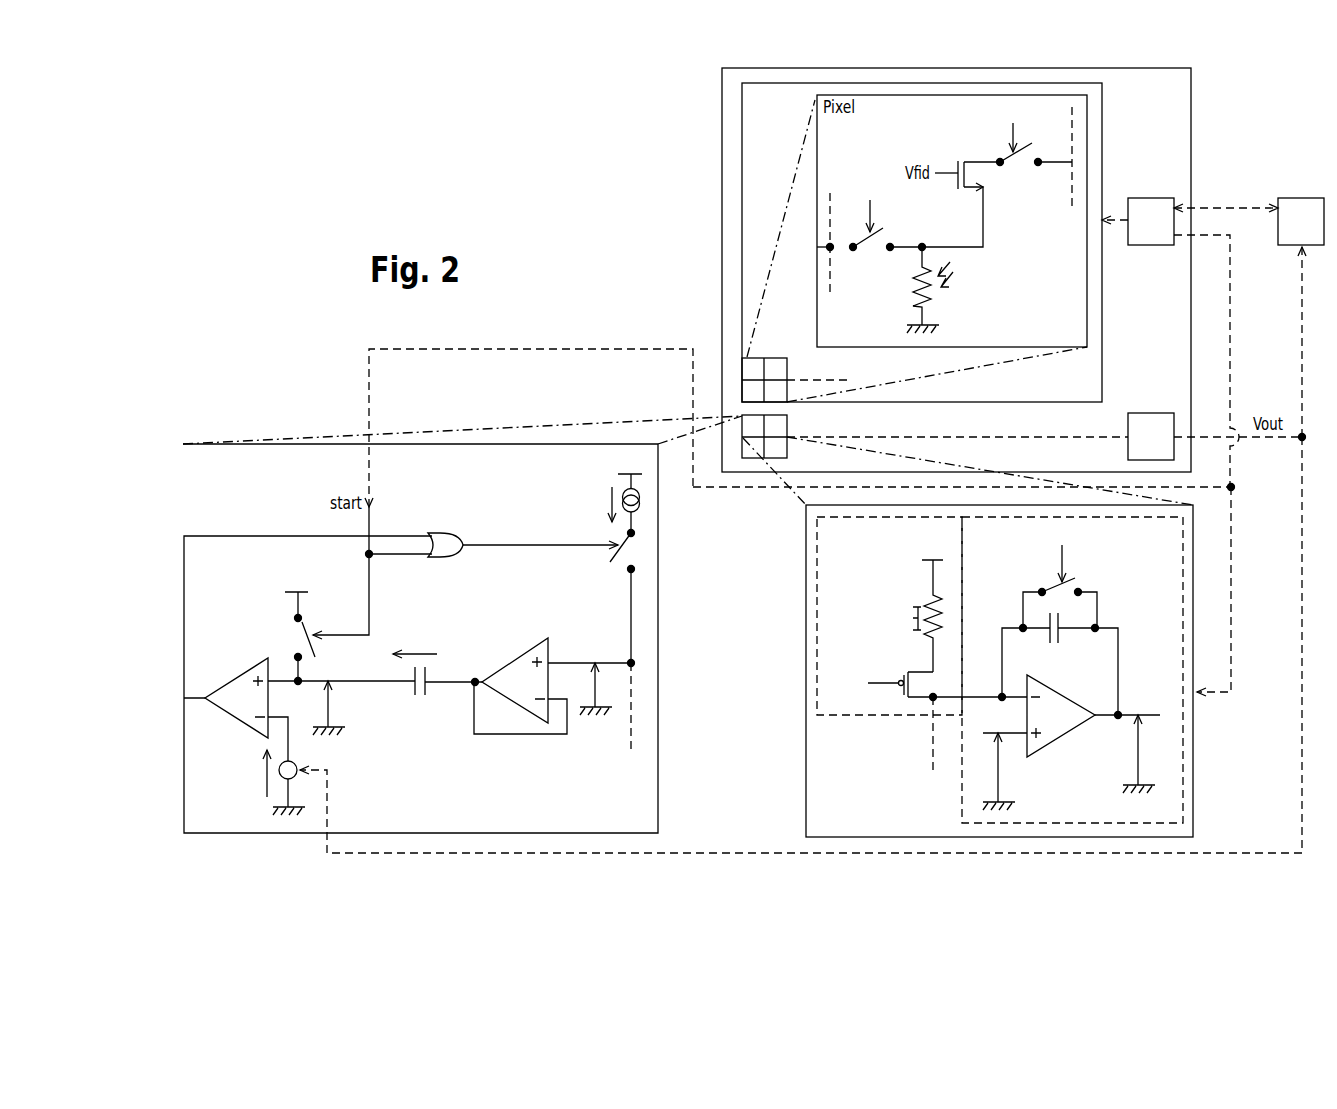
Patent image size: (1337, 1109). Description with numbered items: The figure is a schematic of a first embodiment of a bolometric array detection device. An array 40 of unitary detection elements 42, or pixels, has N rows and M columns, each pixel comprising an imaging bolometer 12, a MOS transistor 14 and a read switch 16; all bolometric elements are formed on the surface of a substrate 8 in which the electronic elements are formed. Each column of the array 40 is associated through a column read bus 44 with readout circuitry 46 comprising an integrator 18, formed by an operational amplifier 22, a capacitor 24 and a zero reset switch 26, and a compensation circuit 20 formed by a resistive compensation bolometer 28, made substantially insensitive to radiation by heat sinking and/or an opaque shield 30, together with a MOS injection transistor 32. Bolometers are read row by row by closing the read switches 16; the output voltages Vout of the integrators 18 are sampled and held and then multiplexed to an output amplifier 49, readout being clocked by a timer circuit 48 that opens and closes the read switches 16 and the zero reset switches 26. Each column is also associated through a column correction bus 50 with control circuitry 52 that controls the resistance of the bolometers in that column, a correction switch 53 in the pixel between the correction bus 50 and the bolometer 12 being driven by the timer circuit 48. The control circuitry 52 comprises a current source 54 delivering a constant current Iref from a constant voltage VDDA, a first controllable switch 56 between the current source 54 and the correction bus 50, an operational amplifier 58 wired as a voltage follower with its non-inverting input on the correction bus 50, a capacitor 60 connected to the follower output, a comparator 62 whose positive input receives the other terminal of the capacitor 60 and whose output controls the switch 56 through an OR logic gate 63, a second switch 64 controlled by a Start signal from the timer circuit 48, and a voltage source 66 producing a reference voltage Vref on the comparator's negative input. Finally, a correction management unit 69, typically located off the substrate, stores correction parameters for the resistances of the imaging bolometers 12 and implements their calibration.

The substrate 8 is at (1192, 160).
The imaging bolometer 12 is at (935, 300).
The MOS transistor 14 is at (965, 158).
The read switch 16 is at (1017, 172).
The integrator 18 is at (1182, 717).
The compensation circuit 20 is at (818, 628).
The operational amplifier 22 is at (1065, 727).
The capacitor 24 is at (1062, 633).
The zero reset switch 26 is at (1057, 580).
The resistive compensation bolometer 28 is at (925, 647).
The opaque shield 30 is at (910, 605).
The MOS injection transistor 32 is at (903, 677).
The array 40 is at (1102, 115).
The unitary detection element 42 is at (817, 247).
The column read bus 44 is at (1072, 190).
The readout circuitry 46 is at (1194, 575).
The timer circuit 48 is at (1150, 207).
The output amplifier 49 is at (1145, 422).
The column correction bus 50 is at (832, 275).
The control circuitry 52 is at (495, 444).
The correction switch 53 is at (873, 251).
The current source 54 is at (642, 498).
The first controllable switch 56 is at (627, 556).
The operational amplifier 58 is at (522, 657).
The capacitor 60 is at (437, 693).
The comparator 62 is at (228, 707).
The OR logic gate 63 is at (448, 557).
The second switch 64 is at (303, 632).
The voltage source 66 is at (303, 748).
The correction management unit 69 is at (1300, 212).